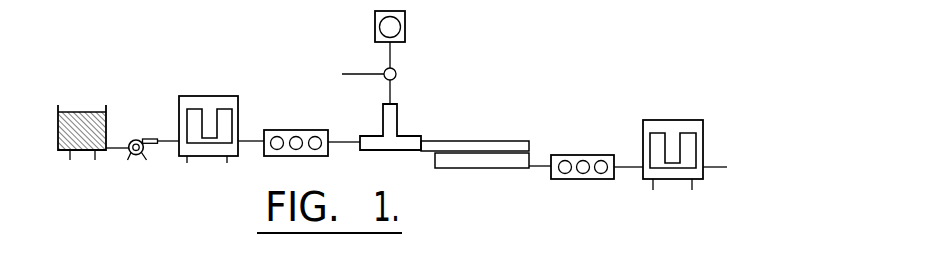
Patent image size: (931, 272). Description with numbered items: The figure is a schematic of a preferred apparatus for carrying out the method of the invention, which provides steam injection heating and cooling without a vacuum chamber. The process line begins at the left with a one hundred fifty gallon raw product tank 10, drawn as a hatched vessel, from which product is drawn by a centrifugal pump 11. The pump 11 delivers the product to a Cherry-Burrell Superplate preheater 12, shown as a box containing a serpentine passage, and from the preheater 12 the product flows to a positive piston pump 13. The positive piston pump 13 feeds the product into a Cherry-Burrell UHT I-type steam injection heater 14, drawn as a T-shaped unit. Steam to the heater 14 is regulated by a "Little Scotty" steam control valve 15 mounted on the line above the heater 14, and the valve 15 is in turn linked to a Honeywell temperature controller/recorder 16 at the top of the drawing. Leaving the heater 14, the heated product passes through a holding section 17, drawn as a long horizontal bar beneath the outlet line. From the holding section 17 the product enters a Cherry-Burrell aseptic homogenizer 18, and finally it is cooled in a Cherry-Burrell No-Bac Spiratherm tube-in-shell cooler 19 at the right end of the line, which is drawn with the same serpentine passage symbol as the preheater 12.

The raw product tank 10 is at (105, 118).
The centrifugal pump 11 is at (138, 140).
The preheater 12 is at (222, 96).
The positive piston pump 13 is at (292, 130).
The steam injection heater 14 is at (408, 134).
The steam control valve 15 is at (395, 70).
The temperature controller/recorder 16 is at (375, 22).
The holding section 17 is at (481, 176).
The aseptic homogenizer 18 is at (591, 155).
The tube-in-shell cooler 19 is at (675, 120).